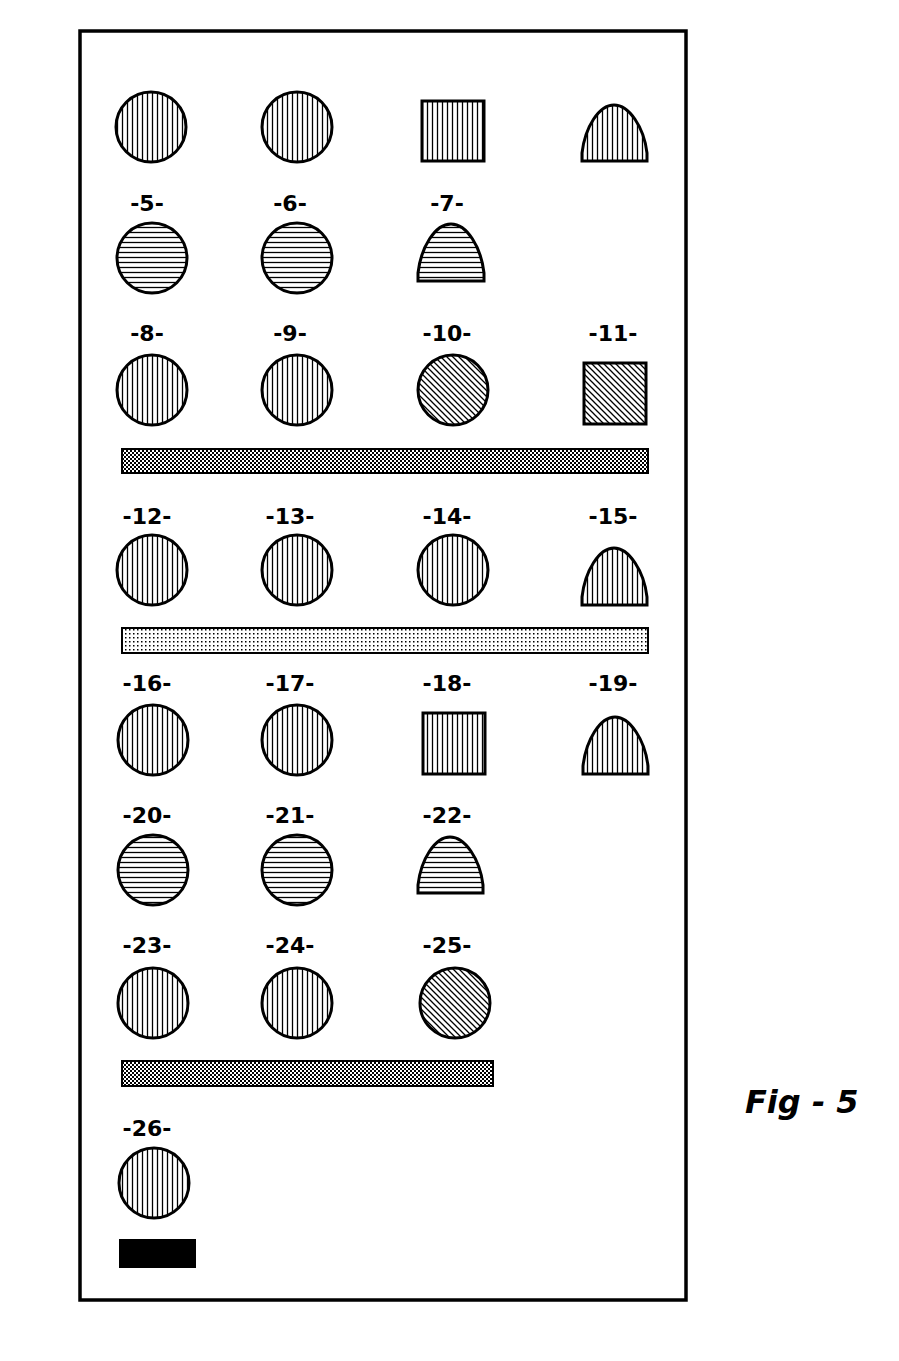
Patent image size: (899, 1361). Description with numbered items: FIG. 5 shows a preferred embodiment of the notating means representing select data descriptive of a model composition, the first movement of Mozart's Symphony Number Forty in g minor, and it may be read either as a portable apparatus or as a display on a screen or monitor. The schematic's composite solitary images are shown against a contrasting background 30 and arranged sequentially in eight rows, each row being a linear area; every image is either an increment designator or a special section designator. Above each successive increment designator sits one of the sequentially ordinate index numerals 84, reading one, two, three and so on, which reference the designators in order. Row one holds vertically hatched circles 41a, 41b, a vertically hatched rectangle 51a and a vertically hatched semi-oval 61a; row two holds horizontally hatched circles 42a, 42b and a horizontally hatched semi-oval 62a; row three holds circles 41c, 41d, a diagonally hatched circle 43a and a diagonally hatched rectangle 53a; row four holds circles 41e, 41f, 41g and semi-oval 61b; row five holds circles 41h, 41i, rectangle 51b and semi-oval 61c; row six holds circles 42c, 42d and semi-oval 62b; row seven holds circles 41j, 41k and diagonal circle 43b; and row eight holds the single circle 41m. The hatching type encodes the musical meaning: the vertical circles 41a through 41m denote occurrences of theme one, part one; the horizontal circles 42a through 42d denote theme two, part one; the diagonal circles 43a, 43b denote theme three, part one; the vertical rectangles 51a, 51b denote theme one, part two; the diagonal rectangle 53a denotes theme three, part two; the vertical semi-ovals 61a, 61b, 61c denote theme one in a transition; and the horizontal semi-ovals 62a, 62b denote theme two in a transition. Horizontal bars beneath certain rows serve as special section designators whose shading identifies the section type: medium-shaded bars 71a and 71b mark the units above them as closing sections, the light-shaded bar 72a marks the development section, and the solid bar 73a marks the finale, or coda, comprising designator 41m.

The contrasting background 30 is at (383, 665).
The index numerals 84 is at (128, 62).
The increment designator 41a is at (118, 132).
The increment designator 41b is at (273, 136).
The increment designator 41c is at (118, 392).
The increment designator 41d is at (273, 397).
The increment designator 41e is at (118, 574).
The increment designator 41f is at (273, 577).
The increment designator 41g is at (422, 573).
The increment designator 41h is at (118, 745).
The increment designator 41i is at (273, 747).
The increment designator 41j is at (118, 1008).
The increment designator 41k is at (273, 1010).
The increment designator 41m is at (118, 1188).
The increment designator 42a is at (118, 263).
The increment designator 42b is at (273, 263).
The increment designator 42c is at (118, 875).
The increment designator 42d is at (273, 877).
The increment designator 43a is at (420, 391).
The increment designator 43b is at (422, 1006).
The increment designator 51a is at (434, 131).
The increment designator 51b is at (434, 743).
The increment designator 53a is at (596, 394).
The increment designator 61a is at (598, 134).
The increment designator 61b is at (598, 577).
The increment designator 61c is at (598, 747).
The increment designator 62a is at (432, 259).
The increment designator 62b is at (432, 869).
The special section designator 71a is at (124, 464).
The special section designator 71b is at (124, 1076).
The special section designator 72a is at (124, 642).
The special section designator 73a is at (120, 1254).